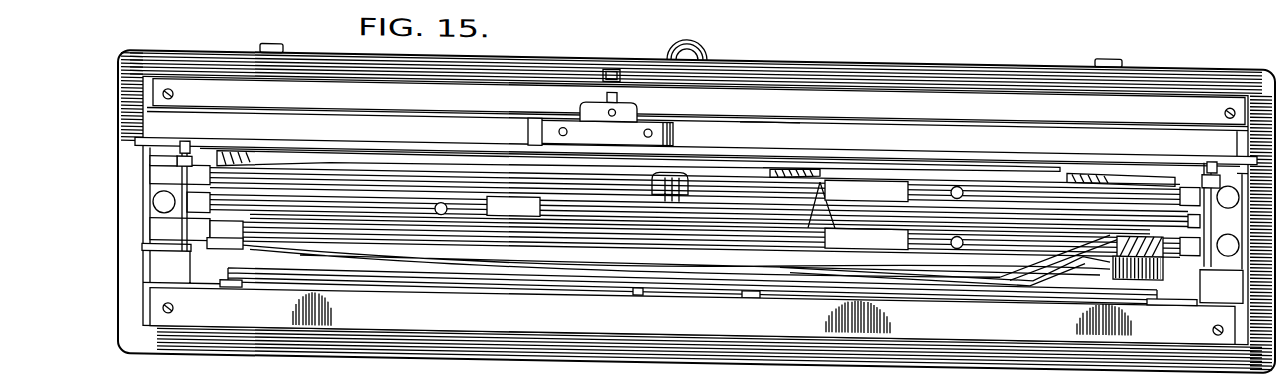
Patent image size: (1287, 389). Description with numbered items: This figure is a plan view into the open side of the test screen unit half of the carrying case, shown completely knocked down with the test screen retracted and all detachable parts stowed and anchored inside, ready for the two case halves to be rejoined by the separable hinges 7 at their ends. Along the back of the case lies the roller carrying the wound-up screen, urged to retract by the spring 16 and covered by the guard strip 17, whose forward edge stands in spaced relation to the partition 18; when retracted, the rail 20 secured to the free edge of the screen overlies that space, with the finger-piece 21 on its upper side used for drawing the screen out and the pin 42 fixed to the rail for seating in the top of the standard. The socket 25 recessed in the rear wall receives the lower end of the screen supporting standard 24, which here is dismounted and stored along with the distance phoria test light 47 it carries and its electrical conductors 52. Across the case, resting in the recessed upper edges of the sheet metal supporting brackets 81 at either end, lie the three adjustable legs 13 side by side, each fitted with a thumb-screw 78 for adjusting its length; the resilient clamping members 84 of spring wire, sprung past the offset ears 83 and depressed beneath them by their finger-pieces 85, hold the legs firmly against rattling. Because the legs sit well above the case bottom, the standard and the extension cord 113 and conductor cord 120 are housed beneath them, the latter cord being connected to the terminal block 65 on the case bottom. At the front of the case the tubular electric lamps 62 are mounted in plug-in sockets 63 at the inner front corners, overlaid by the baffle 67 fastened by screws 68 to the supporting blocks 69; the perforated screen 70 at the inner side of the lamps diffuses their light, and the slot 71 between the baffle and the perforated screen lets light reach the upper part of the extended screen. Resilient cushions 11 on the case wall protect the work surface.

The hinge 7 is at (272, 41).
The resilient cushion 11 is at (708, 42).
The adjustable leg 13 is at (153, 175).
The spring 16 is at (158, 153).
The guard strip 17 is at (870, 84).
The partition 18 is at (900, 147).
The rail 20 is at (770, 135).
The finger-piece 21 is at (670, 130).
The screen supporting standard 24 is at (292, 158).
The socket 25 is at (610, 61).
The pin 42 is at (618, 89).
The distance phoria test light 47 is at (763, 165).
The electrical conductors 52 is at (537, 152).
The electric lamp 62 is at (437, 284).
The socket 63 is at (224, 283).
The terminal block 65 is at (223, 244).
The baffle 67 is at (852, 315).
The screw 68 is at (175, 306).
The supporting block 69 is at (153, 258).
The perforated screen 70 is at (515, 275).
The slot 71 is at (578, 285).
The thumb-screw 78 is at (441, 197).
The supporting bracket 81 is at (1238, 158).
The ear 83 is at (180, 156).
The resilient clamping member 84 is at (155, 208).
The finger-piece 85 is at (191, 143).
The extension cord 113 is at (1040, 163).
The conductor cord 120 is at (362, 262).